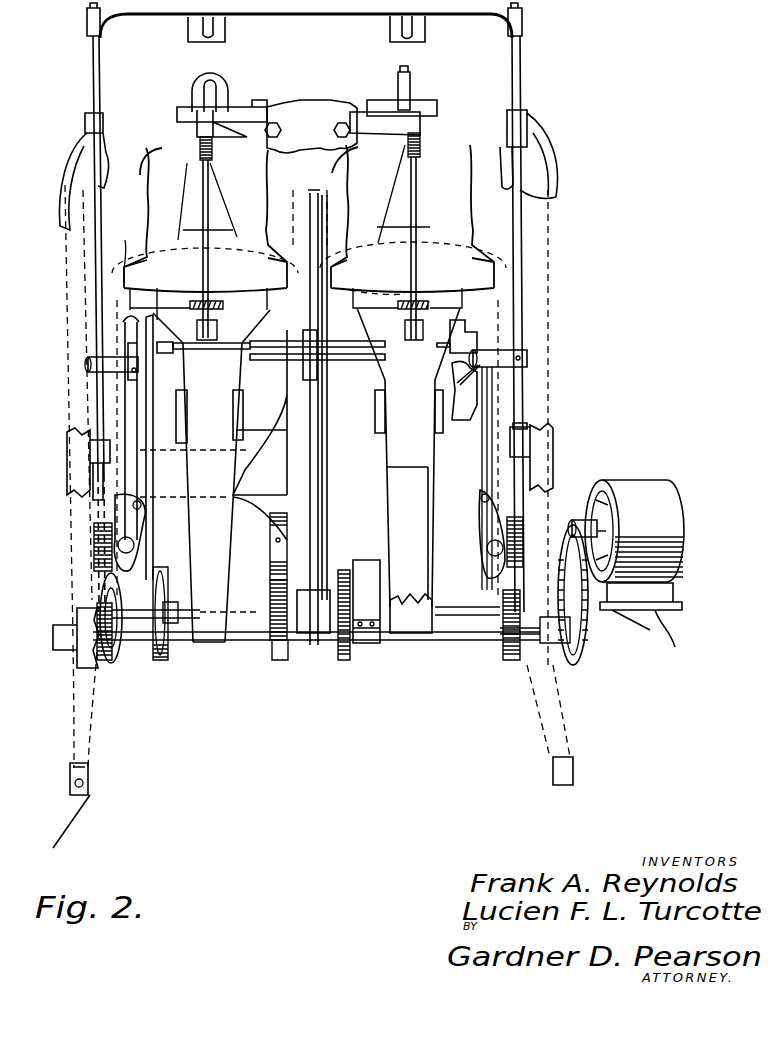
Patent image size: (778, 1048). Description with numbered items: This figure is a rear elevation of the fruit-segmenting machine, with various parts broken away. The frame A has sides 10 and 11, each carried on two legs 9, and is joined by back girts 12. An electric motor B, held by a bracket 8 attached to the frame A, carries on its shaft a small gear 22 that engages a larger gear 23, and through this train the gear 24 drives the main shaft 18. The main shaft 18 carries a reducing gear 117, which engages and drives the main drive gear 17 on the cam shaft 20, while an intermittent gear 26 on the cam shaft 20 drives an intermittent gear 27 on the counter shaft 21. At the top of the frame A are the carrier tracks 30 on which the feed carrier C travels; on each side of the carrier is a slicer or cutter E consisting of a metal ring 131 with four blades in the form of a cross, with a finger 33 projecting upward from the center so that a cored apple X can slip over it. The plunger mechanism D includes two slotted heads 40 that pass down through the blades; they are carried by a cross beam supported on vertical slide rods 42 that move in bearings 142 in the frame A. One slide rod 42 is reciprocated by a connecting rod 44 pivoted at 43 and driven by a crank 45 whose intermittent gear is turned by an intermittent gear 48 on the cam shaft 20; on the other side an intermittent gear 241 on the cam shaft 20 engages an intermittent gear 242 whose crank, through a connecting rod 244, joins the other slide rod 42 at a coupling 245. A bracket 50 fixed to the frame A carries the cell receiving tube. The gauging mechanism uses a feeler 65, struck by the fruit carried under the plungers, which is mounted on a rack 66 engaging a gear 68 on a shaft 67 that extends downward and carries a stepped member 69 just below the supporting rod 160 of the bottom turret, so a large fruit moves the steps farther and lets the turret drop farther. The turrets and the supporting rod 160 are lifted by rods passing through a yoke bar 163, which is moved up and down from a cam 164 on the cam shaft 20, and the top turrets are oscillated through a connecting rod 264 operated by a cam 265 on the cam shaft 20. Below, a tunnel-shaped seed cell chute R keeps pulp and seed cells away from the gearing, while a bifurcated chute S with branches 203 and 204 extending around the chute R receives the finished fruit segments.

The bracket 8 is at (677, 612).
The leg 9 is at (88, 778).
The side 10 is at (548, 463).
The side 11 is at (67, 438).
The back girt 12 is at (414, 647).
The main drive gear 17 is at (366, 601).
The main shaft 18 is at (120, 655).
The cam shaft 20 is at (470, 618).
The counter shaft 21 is at (285, 522).
The small gear 22 is at (580, 520).
The larger gear 23 is at (582, 610).
The gear 24 is at (588, 655).
The intermittent gear 26 is at (278, 662).
The intermittent gear 27 is at (275, 512).
The carrier track 30 is at (280, 133).
The finger 33 is at (410, 72).
The plunger head 40 is at (225, 34).
The vertical slide rod 42 is at (97, 257).
The pivot 43 is at (462, 370).
The connecting rod 44 is at (484, 441).
The crank 45 is at (135, 540).
The intermittent gear 48 is at (512, 660).
The bracket 50 is at (187, 302).
The feeler 65 is at (198, 86).
The rack 66 is at (196, 124).
The shaft 67 is at (204, 268).
The gear 68 is at (200, 152).
The stepped member 69 is at (218, 330).
The reducing gear 117 is at (352, 650).
The metal ring 131 is at (180, 116).
The bearing 142 is at (88, 118).
The supporting rod 160 is at (309, 297).
The yoke bar 163 is at (347, 358).
The cam 164 is at (307, 640).
The branch 203 is at (128, 298).
The branch 204 is at (273, 435).
The intermittent gear 241 is at (96, 604).
The intermittent gear 242 is at (93, 540).
The connecting rod 244 is at (138, 447).
The coupling 245 is at (97, 366).
The connecting rod 264 is at (154, 474).
The cam 265 is at (160, 662).
The frame A is at (72, 460).
The electric motor B is at (676, 538).
The feed carrier C is at (280, 115).
The plunger mechanism D is at (316, 6).
The slicer or cutter E is at (178, 110).
The seed cell chute R is at (205, 407).
The bifurcated chute S is at (195, 348).
The apple X is at (228, 90).